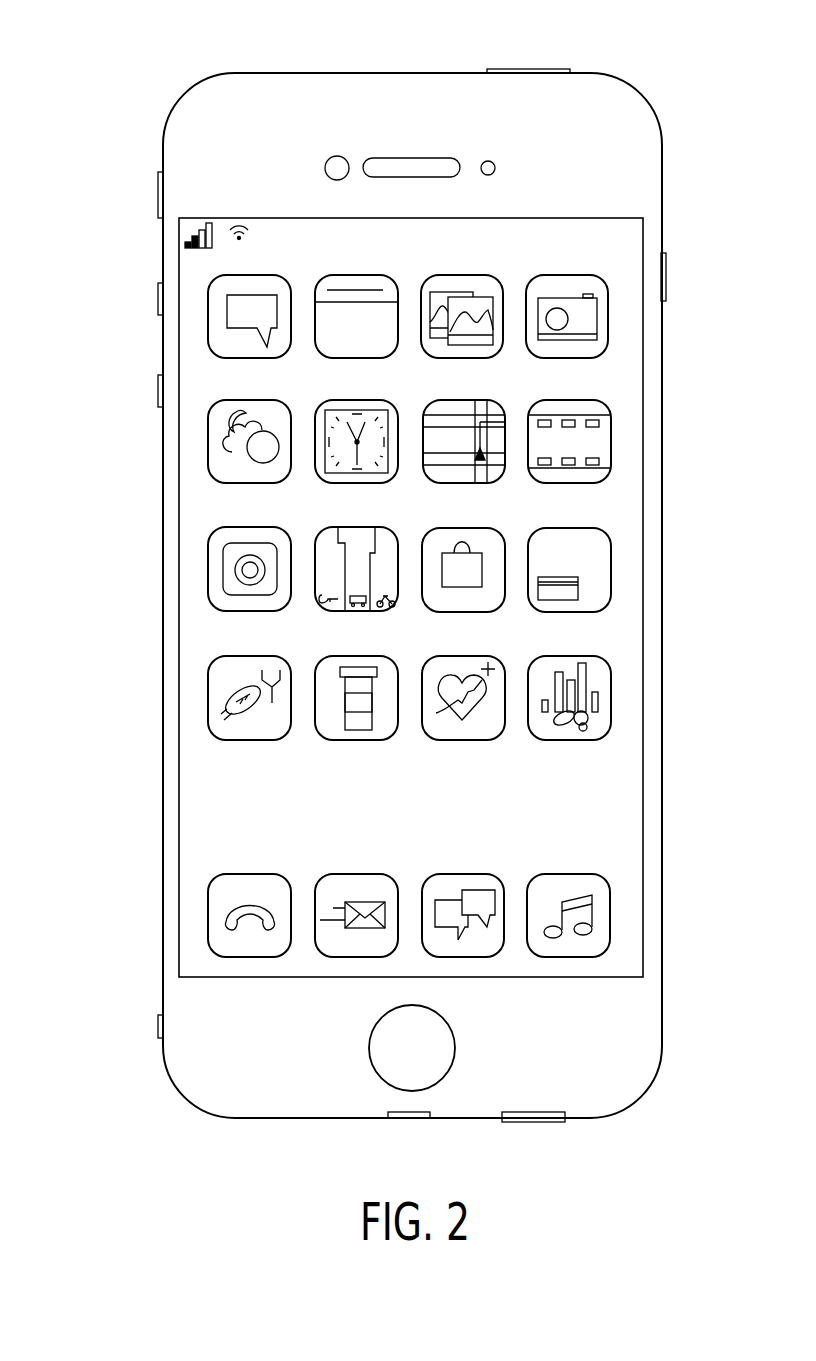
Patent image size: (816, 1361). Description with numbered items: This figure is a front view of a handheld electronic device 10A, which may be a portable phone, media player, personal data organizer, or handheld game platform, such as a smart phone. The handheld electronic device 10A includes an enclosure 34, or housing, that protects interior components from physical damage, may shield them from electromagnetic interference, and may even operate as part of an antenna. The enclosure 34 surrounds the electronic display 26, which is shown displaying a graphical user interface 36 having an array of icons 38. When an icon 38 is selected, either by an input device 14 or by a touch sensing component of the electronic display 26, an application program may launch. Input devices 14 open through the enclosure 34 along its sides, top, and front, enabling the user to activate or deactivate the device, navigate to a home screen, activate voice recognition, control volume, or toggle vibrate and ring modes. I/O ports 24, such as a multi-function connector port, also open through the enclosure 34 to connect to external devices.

The handheld electronic device 10A is at (128, 46).
The input devices 14 is at (527, 69).
The I/O ports 24 is at (260, 1122).
The electronic display 26 is at (643, 647).
The enclosure 34 is at (662, 180).
The graphical user interface 36 is at (616, 507).
The icons 38 is at (462, 740).